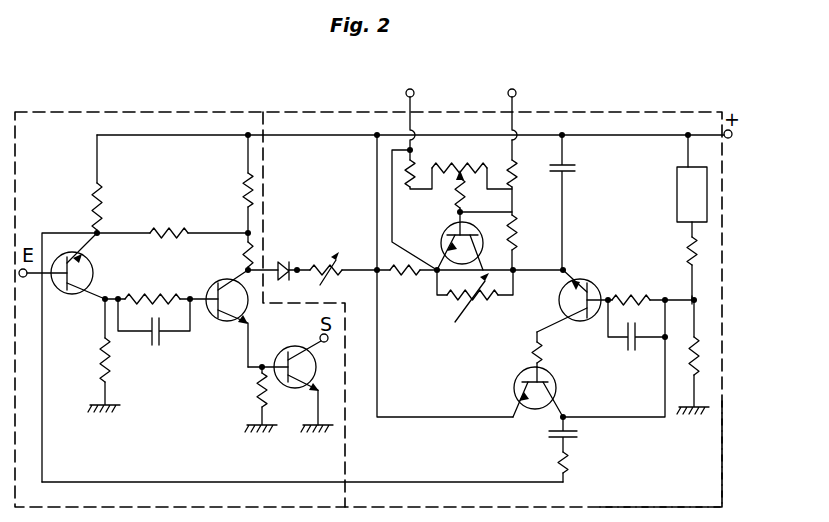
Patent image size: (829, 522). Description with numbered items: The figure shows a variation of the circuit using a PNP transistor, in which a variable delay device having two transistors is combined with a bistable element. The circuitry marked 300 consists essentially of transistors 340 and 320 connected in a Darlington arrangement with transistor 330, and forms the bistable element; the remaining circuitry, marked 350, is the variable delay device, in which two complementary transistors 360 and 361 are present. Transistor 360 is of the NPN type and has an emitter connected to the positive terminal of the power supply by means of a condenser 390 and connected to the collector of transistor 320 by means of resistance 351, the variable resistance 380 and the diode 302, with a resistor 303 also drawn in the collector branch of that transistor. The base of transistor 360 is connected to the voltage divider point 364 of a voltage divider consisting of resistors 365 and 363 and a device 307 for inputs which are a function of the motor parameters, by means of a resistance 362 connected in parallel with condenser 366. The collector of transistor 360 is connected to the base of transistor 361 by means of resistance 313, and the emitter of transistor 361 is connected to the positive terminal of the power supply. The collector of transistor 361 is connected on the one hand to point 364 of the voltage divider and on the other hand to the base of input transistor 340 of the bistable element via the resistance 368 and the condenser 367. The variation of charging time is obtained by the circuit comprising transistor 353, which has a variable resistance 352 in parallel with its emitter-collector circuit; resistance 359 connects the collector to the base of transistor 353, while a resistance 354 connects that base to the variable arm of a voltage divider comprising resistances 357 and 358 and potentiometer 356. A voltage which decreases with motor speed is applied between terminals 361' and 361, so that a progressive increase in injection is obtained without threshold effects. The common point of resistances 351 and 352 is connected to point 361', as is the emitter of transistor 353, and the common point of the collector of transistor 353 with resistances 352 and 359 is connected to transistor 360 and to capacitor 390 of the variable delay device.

The bistable element circuitry 300 is at (68, 112).
The control circuit section 350 is at (661, 453).
The input transistor 340 is at (93, 279).
The transistor 320 is at (210, 284).
The transistor 330 is at (297, 383).
The resistor 303 is at (256, 263).
The diode 302 is at (286, 283).
The variable resistance 380 is at (350, 259).
The resistance 351 is at (413, 287).
The variable resistance 352 is at (475, 300).
The transistor 353 is at (441, 243).
The resistance 354 is at (466, 196).
The potentiometer 356 is at (472, 164).
The resistance 357 is at (420, 183).
The resistance 358 is at (517, 185).
The resistance 359 is at (518, 240).
The NPN transistor 360 is at (584, 280).
The transistor / terminal 361 is at (553, 243).
The terminal 361' is at (421, 110).
The resistance 362 is at (651, 287).
The resistor 363 is at (690, 258).
The voltage divider point 364 is at (712, 289).
The resistor 365 is at (699, 350).
The condenser 366 is at (636, 345).
The condenser 367 is at (578, 435).
The resistance 368 is at (558, 468).
The condenser 390 is at (582, 160).
The device for inputs which are a function of the motor parameters 307 is at (677, 200).
The resistance 313 is at (542, 355).